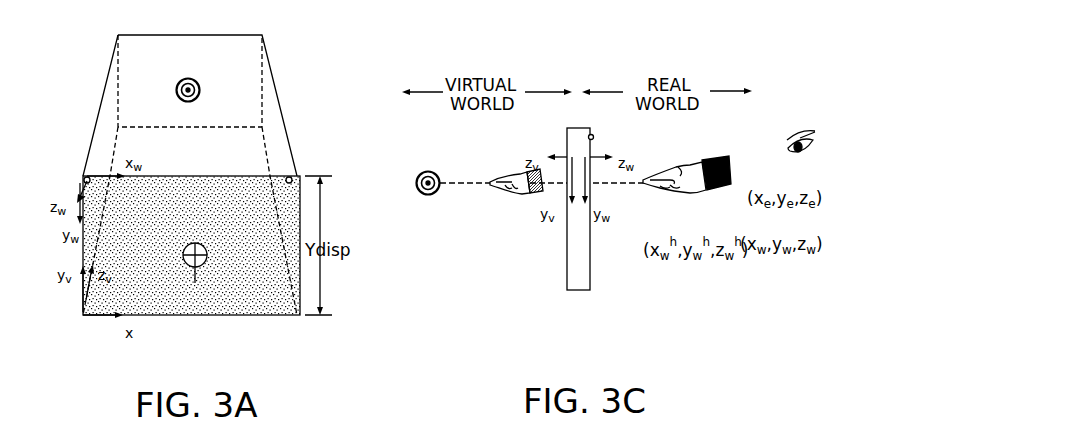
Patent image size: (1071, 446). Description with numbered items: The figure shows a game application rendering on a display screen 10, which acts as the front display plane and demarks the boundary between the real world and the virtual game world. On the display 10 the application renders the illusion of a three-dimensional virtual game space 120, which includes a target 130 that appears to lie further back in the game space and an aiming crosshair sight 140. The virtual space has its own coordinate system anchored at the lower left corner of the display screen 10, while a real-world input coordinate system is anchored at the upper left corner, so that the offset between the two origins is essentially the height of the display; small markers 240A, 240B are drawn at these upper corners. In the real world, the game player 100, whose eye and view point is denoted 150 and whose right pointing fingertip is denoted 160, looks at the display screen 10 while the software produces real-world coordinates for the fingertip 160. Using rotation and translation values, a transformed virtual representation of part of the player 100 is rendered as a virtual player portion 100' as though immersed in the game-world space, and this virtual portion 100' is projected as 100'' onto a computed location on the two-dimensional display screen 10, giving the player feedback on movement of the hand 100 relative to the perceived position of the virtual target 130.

In FIG. 3A, the display screen 10 is at (233, 302).
In FIG. 3C, the display screen 10 is at (592, 258).
In FIG. 3A, the virtual three-dimensional game space 120 is at (304, 129).
In FIG. 3A, the target 130 is at (193, 79).
In FIG. 3C, the target 130 is at (428, 196).
In FIG. 3A, the aiming crosshair sight 140 is at (201, 274).
In FIG. 3C, the eye and view point of the game player 150 is at (791, 153).
In FIG. 3C, the right pointing fingertip 160 is at (646, 188).
In FIG. 3A, the position sensor A 240A is at (84, 173).
In FIG. 3C, the position sensor A 240A is at (594, 136).
In FIG. 3A, the position sensor B 240B is at (291, 174).
In FIG. 3C, the game player 100 is at (710, 195).
In FIG. 3C, the virtual player portion 100' is at (519, 211).
In FIG. 3C, the projected player portion 100'' is at (621, 206).